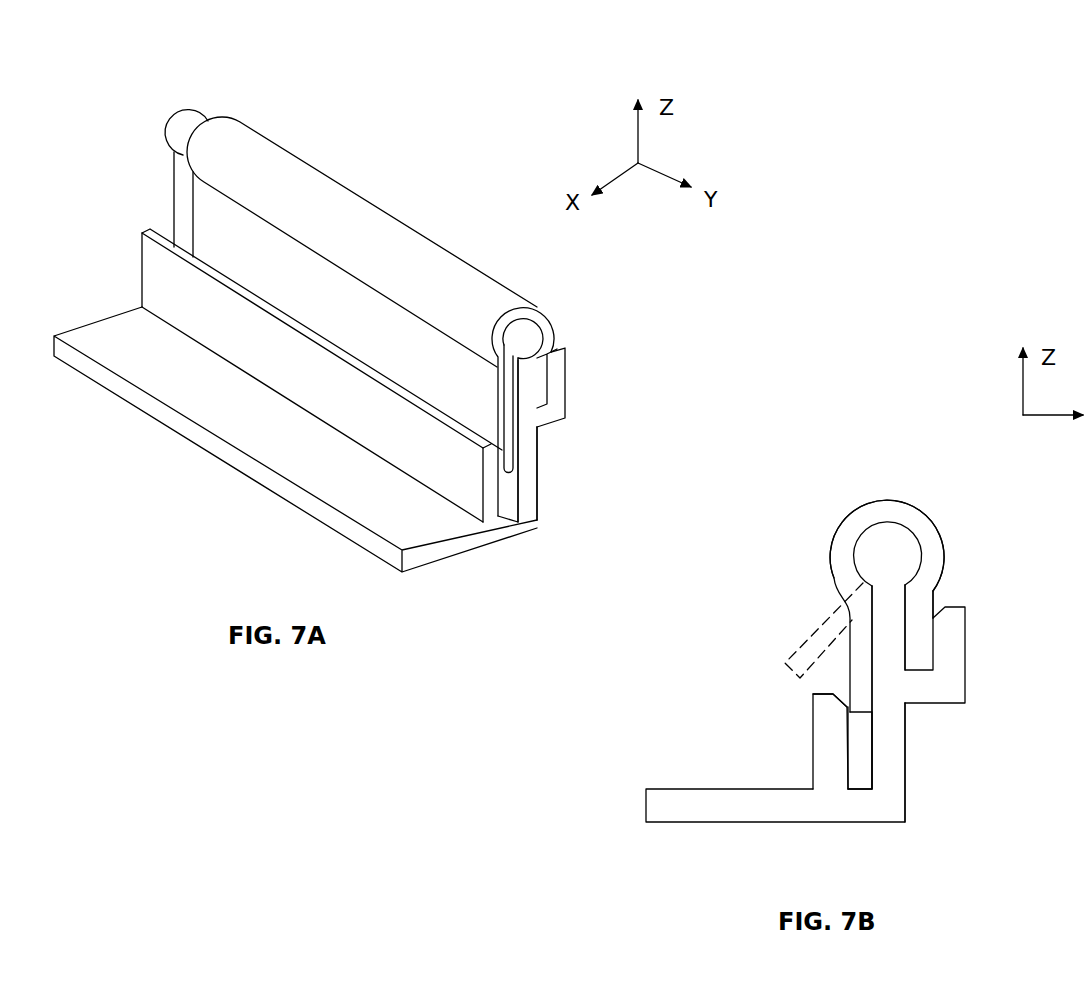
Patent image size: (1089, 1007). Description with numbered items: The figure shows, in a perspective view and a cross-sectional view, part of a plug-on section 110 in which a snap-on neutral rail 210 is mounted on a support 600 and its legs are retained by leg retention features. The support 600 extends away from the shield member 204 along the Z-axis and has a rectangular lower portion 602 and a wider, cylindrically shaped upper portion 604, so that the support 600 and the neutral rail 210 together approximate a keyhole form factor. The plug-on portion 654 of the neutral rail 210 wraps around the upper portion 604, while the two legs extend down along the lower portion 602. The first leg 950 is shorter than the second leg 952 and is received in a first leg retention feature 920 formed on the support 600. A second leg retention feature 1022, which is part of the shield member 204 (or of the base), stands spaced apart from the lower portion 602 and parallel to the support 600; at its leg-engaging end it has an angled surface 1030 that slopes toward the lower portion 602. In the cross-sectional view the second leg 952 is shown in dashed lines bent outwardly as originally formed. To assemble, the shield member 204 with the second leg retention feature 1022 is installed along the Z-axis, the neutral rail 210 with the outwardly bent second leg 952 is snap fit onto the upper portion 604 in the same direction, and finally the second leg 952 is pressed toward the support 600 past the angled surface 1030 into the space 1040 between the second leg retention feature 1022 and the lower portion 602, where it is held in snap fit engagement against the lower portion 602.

In FIG. 7A, the plug-on section 110 is at (434, 142).
In FIG. 7A, the shield member 204 is at (122, 368).
In FIG. 7B, the shield member 204 is at (688, 813).
In FIG. 7A, the neutral rail 210 is at (476, 283).
In FIG. 7B, the neutral rail 210 is at (910, 510).
In FIG. 7A, the support 600 is at (530, 500).
In FIG. 7B, the support 600 is at (893, 783).
In FIG. 7A, the lower portion 602 is at (528, 457).
In FIG. 7B, the lower portion 602 is at (892, 730).
In FIG. 7A, the upper portion 604 is at (527, 343).
In FIG. 7B, the upper portion 604 is at (890, 550).
In FIG. 7A, the plug-on portion 654 is at (404, 242).
In FIG. 7B, the plug-on portion 654 is at (887, 510).
In FIG. 7A, the first leg retention feature 920 is at (558, 395).
In FIG. 7B, the first leg retention feature 920 is at (958, 634).
In FIG. 7A, the first leg 950 is at (538, 388).
In FIG. 7B, the first leg 950 is at (917, 620).
In FIG. 7A, the second leg 952 is at (345, 305).
In FIG. 7B, the second leg 952 is at (823, 625).
In FIG. 7A, the second leg retention feature 1022 is at (270, 360).
In FIG. 7B, the second leg retention feature 1022 is at (830, 760).
In FIG. 7A, the angled surface 1030 is at (432, 380).
In FIG. 7B, the angled surface 1030 is at (840, 693).
In FIG. 7A, the space 1040 is at (510, 481).
In FIG. 7B, the space 1040 is at (860, 778).